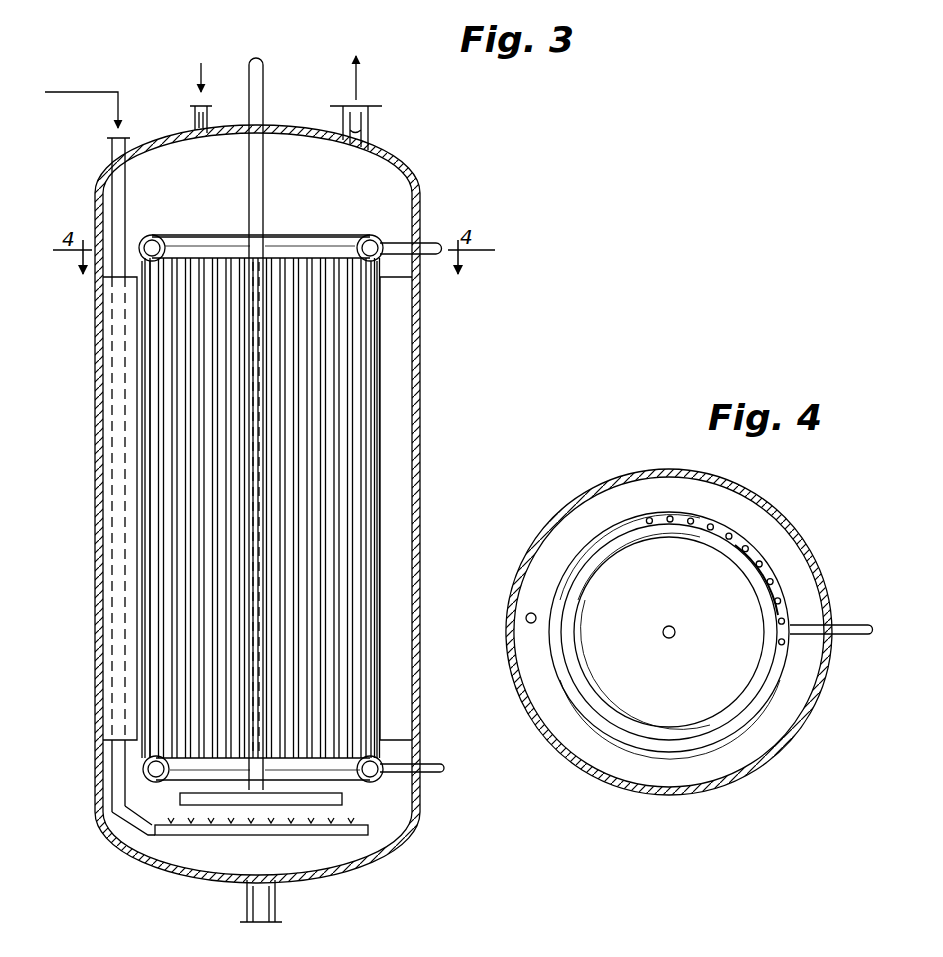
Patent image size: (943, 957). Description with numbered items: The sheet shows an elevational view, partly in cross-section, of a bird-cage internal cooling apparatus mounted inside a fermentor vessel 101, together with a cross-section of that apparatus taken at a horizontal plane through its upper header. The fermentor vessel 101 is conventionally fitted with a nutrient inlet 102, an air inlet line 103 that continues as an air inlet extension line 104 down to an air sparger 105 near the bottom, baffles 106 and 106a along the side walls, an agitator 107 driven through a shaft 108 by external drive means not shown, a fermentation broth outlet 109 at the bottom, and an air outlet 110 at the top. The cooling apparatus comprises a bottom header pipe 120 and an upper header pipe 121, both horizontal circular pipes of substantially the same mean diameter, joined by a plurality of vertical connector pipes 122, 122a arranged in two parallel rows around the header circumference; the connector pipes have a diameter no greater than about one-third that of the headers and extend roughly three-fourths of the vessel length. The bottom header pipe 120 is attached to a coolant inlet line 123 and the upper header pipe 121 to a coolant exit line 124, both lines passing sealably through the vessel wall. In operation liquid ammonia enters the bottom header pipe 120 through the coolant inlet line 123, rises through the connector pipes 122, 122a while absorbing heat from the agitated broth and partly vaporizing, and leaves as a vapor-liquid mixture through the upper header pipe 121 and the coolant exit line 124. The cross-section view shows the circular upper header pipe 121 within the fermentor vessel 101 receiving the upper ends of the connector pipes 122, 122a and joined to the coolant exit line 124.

In FIG. 3, the fermentor vessel 101 is at (422, 342).
In FIG. 4, the fermentor vessel 101 is at (787, 511).
In FIG. 3, the nutrient inlet 102 is at (195, 113).
In FIG. 3, the air inlet line 103 is at (86, 92).
In FIG. 3, the air inlet extension line 104 is at (112, 158).
In FIG. 4, the air inlet extension line 104 is at (529, 614).
In FIG. 3, the air sparger 105 is at (307, 836).
In FIG. 3, the baffle 106 is at (116, 470).
In FIG. 3, the baffle 106a is at (400, 458).
In FIG. 3, the agitator 107 is at (345, 798).
In FIG. 3, the shaft 108 is at (263, 70).
In FIG. 4, the shaft 108 is at (664, 638).
In FIG. 3, the fermentation broth outlet 109 is at (276, 906).
In FIG. 3, the air outlet 110 is at (370, 121).
In FIG. 3, the bottom header pipe 120 is at (133, 822).
In FIG. 3, the upper header pipe 121 is at (284, 237).
In FIG. 4, the upper header pipe 121 is at (740, 745).
In FIG. 3, the vertical connector pipe 122 is at (206, 262).
In FIG. 4, the vertical connector pipe 122 is at (705, 540).
In FIG. 3, the vertical connector pipe 122a is at (140, 745).
In FIG. 4, the vertical connector pipe 122a is at (762, 566).
In FIG. 3, the coolant inlet line 123 is at (430, 770).
In FIG. 3, the coolant exit line 124 is at (428, 243).
In FIG. 4, the coolant exit line 124 is at (850, 625).